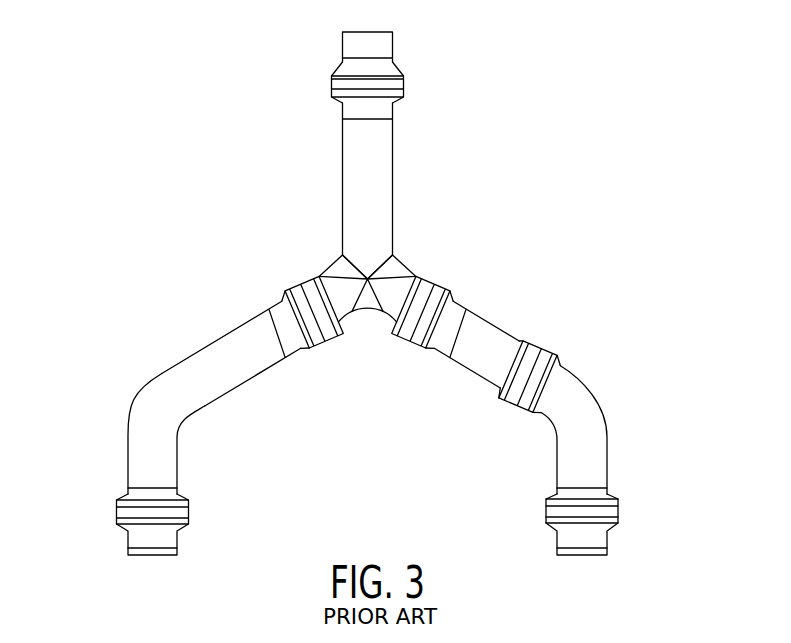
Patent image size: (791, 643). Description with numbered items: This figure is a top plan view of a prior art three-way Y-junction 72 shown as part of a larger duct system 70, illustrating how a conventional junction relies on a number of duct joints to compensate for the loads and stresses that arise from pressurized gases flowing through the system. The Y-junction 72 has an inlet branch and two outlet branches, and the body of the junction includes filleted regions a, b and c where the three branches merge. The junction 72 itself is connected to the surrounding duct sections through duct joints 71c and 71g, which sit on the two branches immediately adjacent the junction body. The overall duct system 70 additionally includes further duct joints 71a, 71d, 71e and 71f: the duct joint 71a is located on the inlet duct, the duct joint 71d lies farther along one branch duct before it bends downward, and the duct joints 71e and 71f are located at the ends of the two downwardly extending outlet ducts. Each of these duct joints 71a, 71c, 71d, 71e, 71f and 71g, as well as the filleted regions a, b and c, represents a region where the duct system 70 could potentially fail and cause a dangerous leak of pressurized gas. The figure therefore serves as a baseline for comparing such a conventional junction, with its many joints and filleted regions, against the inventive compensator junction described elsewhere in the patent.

The duct system 70 is at (420, 43).
The duct joint 71a is at (358, 80).
The duct joint 71c is at (422, 313).
The duct joint 71d is at (538, 352).
The duct joint 71e is at (600, 513).
The duct joint 71f is at (140, 512).
The duct joint 71g is at (315, 317).
The Y-junction 72 is at (368, 277).
The filleted region a is at (368, 300).
The filleted region b is at (385, 270).
The filleted region c is at (348, 270).